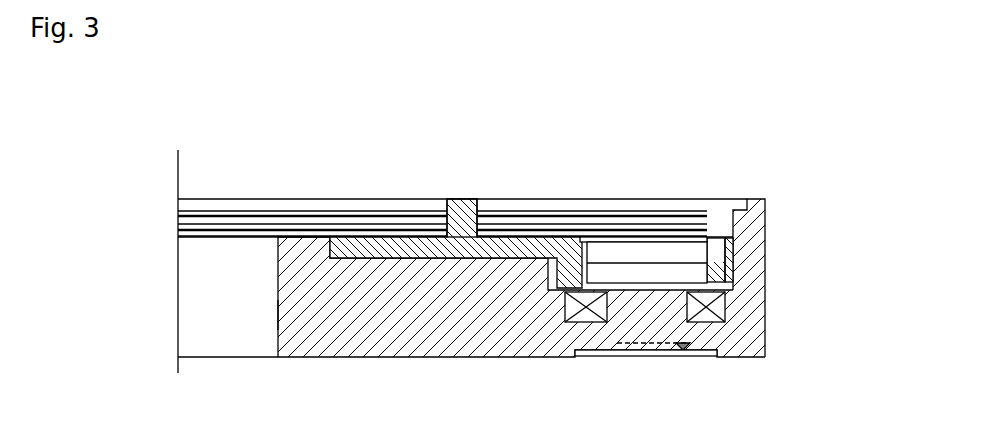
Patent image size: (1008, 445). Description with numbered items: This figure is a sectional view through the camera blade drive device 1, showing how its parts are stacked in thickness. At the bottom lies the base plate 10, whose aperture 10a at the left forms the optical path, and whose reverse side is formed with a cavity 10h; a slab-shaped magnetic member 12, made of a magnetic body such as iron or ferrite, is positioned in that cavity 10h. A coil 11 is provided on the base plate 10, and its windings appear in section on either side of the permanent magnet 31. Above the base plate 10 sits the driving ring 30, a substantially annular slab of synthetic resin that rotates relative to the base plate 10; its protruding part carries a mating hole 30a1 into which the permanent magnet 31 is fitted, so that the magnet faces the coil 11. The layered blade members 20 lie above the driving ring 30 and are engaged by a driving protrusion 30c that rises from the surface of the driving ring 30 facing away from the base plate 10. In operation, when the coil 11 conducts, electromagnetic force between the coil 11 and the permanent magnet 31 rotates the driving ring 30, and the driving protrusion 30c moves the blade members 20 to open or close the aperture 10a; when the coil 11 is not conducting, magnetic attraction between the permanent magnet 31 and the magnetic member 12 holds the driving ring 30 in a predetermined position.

The camera blade drive device 1 is at (735, 184).
The base plate 10 is at (373, 358).
The aperture 10a is at (278, 312).
The cavity 10h is at (628, 356).
The coil 11 is at (735, 298).
The magnetic member 12 is at (700, 356).
The blade member 20 is at (557, 210).
The driving ring 30 is at (735, 272).
The mating hole 30a1 is at (727, 250).
The driving protrusion 30c is at (463, 199).
The permanent magnet 31 is at (661, 248).